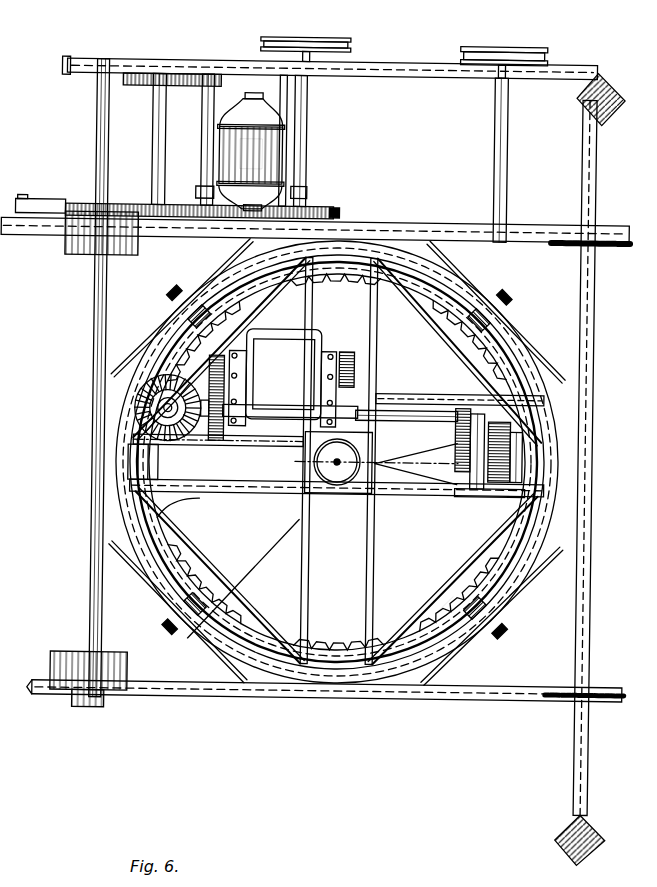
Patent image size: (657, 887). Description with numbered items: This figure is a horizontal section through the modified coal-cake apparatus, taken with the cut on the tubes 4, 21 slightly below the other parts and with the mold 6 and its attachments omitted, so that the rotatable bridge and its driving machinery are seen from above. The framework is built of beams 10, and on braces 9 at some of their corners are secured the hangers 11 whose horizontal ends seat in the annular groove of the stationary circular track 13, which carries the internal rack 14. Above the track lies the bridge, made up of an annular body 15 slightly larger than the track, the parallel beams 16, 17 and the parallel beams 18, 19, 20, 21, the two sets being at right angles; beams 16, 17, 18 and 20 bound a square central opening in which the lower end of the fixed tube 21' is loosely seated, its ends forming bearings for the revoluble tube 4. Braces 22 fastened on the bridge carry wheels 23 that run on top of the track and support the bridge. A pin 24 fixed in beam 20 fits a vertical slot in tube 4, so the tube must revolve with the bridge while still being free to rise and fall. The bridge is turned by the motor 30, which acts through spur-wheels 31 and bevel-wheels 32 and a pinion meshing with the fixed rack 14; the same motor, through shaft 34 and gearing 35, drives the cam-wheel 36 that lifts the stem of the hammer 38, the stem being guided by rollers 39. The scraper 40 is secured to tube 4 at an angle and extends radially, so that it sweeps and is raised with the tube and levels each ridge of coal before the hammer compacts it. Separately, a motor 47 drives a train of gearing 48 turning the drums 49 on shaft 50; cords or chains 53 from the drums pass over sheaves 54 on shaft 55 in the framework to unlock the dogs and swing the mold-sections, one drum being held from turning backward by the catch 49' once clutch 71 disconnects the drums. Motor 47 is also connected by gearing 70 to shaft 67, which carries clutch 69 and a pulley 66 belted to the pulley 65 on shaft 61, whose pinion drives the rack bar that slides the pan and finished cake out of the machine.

The revoluble tube 4 is at (130, 430).
The mold 6 is at (395, 262).
The braces 9 is at (148, 330).
The beams 10 is at (532, 240).
The hangers 11 is at (176, 290).
The circular track 13 is at (500, 400).
The internal rack 14 is at (345, 282).
The annular body 15 is at (455, 612).
The parallel beam 16 is at (310, 560).
The parallel beam 17 is at (376, 530).
The parallel beam 18 is at (245, 495).
The parallel beam 19 is at (312, 462).
The parallel beam 20 is at (386, 408).
The parallel beam 21 is at (460, 381).
The fixed tube 21' is at (218, 456).
The braces 22 is at (258, 338).
The wheels 23 is at (166, 296).
The pin 24 is at (300, 440).
The motor 30 is at (305, 335).
The spur-wheels 31 is at (225, 392).
The bevel-wheels 32 is at (172, 430).
The shaft 34 is at (418, 460).
The gearing 35 is at (376, 478).
The cam-wheel 36 is at (498, 430).
The hammer 38 is at (172, 500).
The rollers 39 is at (460, 496).
The scraper 40 is at (262, 560).
The motor 47 is at (280, 138).
The train of gearing 48 is at (182, 96).
The drums 49 is at (75, 459).
The catch 49' is at (40, 190).
The shaft 50 is at (92, 531).
The cords or chains 53 is at (455, 228).
The sheaves 54 is at (612, 246).
The shaft 55 is at (592, 446).
The shaft 61 is at (504, 125).
The pulley 65 is at (530, 46).
The pulley 66 is at (325, 40).
The shaft 67 is at (303, 108).
The clutch 69 is at (304, 193).
The gearing 70 is at (338, 212).
The clutch 71 is at (251, 154).